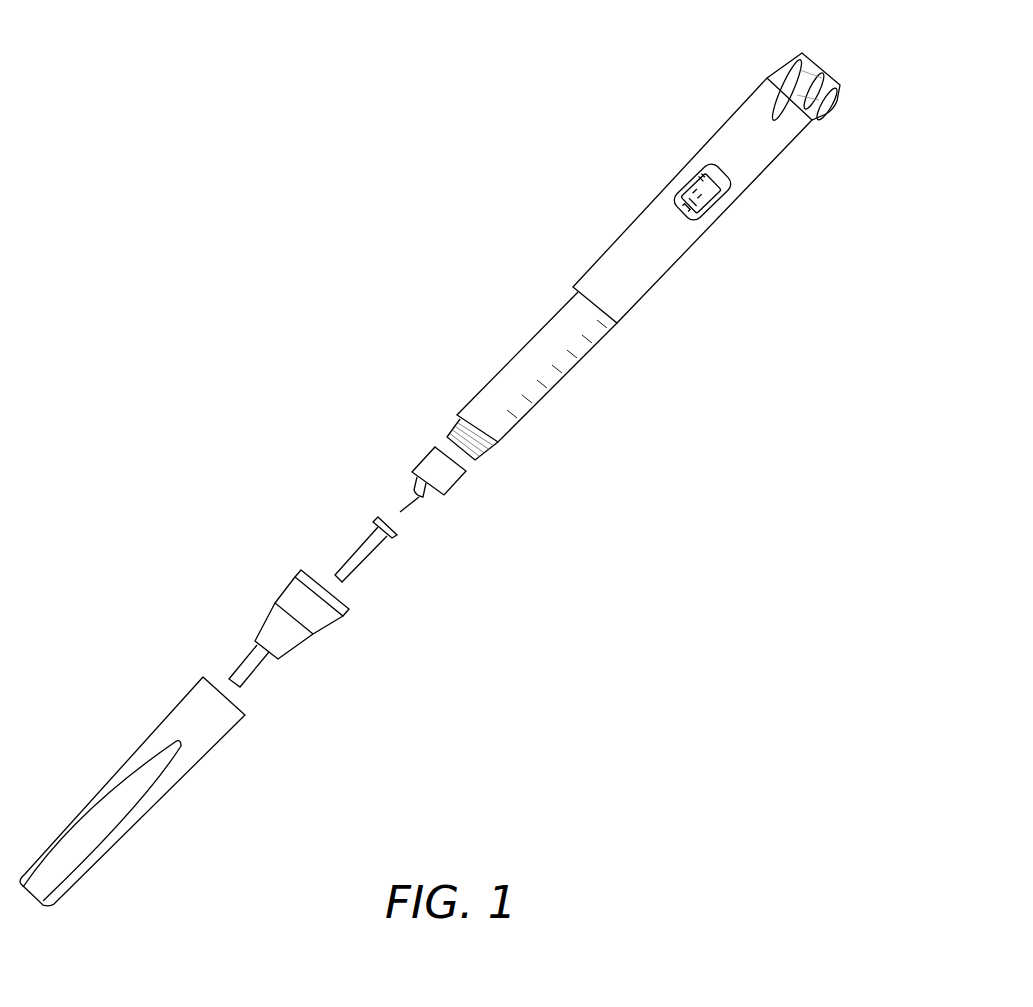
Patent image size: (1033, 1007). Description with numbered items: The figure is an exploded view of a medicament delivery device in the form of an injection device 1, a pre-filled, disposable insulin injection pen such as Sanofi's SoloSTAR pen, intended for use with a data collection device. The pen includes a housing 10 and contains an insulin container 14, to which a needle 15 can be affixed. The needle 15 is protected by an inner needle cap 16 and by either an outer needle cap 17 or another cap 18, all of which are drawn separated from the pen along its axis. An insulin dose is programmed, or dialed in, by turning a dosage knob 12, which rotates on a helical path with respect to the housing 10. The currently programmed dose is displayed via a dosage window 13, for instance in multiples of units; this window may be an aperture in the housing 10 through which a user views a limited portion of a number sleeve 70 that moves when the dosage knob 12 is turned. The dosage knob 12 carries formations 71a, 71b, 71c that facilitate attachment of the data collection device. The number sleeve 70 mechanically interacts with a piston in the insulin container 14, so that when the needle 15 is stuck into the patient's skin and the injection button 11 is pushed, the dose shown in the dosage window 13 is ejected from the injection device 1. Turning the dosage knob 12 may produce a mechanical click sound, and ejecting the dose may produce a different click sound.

The injection device 1 is at (500, 246).
The housing 10 is at (632, 237).
The injection button 11 is at (821, 76).
The dosage knob 12 is at (761, 67).
The dosage window 13 is at (740, 190).
The number sleeve 70 is at (724, 190).
The formation 71a is at (823, 115).
The formation 71b is at (832, 81).
The formation 71c is at (781, 76).
The insulin container 14 is at (523, 353).
The needle 15 is at (430, 462).
The inner needle cap 16 is at (358, 552).
The outer needle cap 17 is at (293, 597).
The cap 18 is at (182, 708).